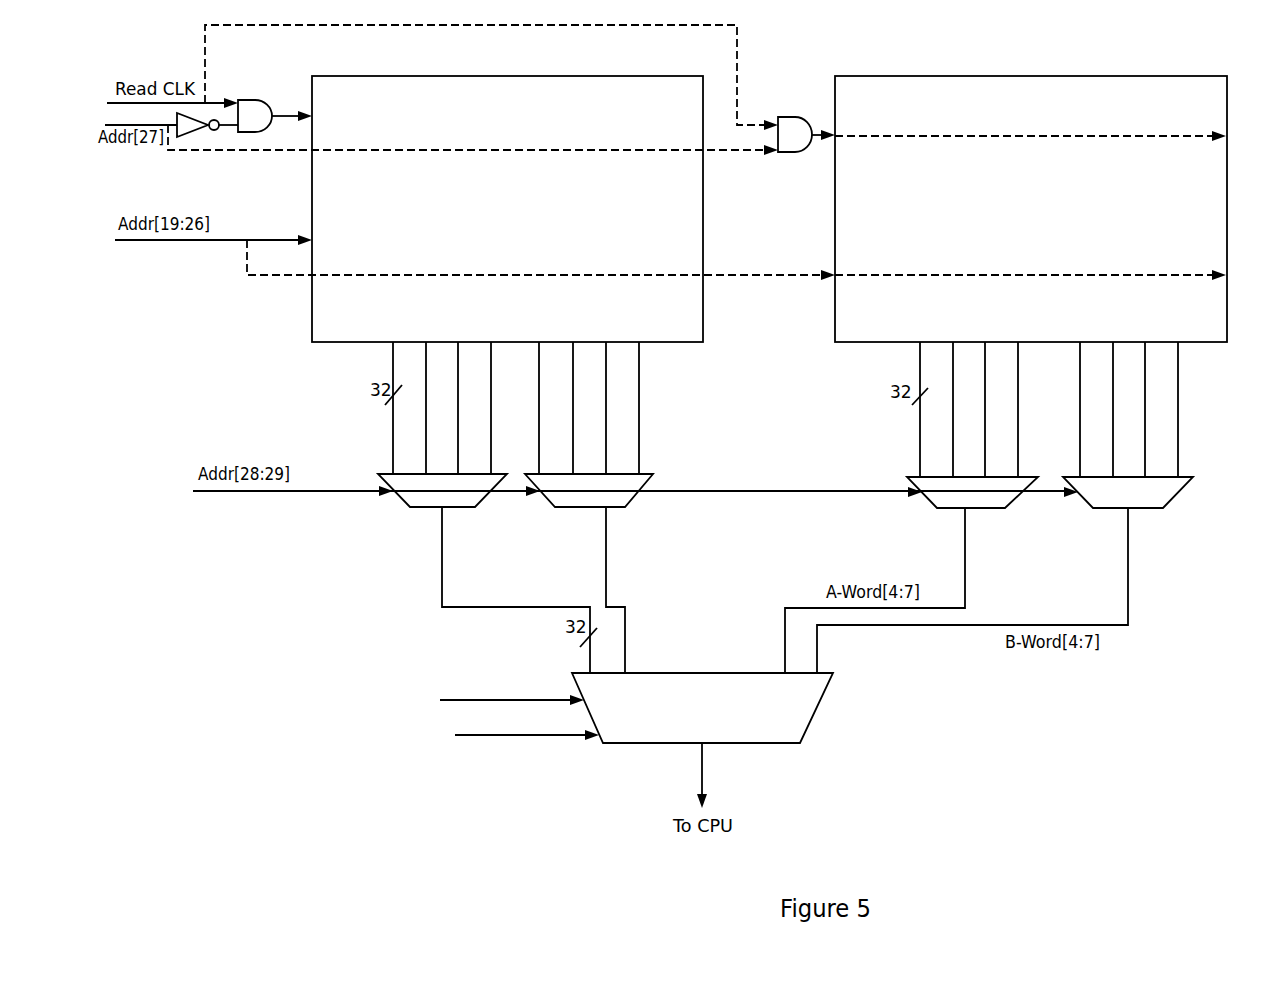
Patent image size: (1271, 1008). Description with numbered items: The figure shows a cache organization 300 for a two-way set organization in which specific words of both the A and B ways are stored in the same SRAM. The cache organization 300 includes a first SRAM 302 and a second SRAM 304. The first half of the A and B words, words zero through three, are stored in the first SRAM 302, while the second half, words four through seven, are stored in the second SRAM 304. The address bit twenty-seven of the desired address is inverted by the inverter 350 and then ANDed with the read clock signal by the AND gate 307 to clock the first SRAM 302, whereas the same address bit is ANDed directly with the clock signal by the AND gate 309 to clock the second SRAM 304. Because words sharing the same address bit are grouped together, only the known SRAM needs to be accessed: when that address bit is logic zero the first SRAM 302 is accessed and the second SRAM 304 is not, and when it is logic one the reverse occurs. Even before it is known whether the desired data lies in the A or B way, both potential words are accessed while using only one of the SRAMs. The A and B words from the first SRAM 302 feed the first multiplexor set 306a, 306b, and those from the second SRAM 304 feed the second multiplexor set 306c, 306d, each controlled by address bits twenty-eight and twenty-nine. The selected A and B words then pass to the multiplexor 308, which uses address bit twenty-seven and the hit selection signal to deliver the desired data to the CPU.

The cache organization 300 is at (844, 873).
The first SRAM 302 is at (510, 75).
The second SRAM 304 is at (1035, 75).
The first multiplexor set multiplexor 306a is at (378, 473).
The first multiplexor set multiplexor 306b is at (650, 475).
The second multiplexor set multiplexor 306c is at (908, 477).
The second multiplexor set multiplexor 306d is at (1192, 477).
The AND gate 307 is at (247, 100).
The multiplexor 308 is at (832, 675).
The AND gate 309 is at (785, 117).
The inverter 350 is at (190, 135).